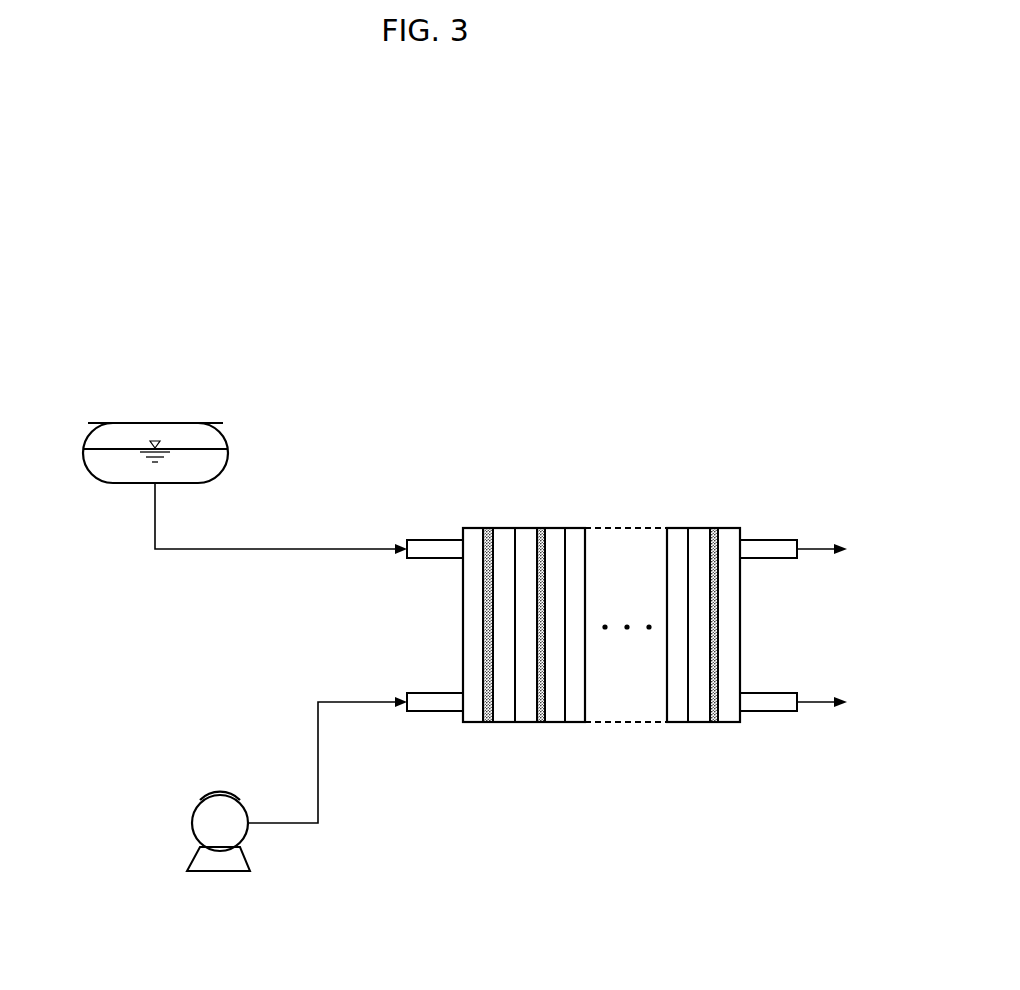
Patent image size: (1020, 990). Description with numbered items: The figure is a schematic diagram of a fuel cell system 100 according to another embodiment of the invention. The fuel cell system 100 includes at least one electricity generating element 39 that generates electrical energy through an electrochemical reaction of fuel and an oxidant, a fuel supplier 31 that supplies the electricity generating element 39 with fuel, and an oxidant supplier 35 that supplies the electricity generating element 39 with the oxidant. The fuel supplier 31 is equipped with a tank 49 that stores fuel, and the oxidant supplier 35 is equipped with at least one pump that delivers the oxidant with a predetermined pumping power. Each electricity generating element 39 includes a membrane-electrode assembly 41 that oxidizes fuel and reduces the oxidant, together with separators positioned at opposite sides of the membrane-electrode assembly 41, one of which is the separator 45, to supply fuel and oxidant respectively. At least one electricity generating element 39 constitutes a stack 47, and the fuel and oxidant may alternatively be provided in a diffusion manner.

The fuel cell system 100 is at (788, 400).
The fuel supplier 31 is at (70, 440).
The tank 49 is at (155, 423).
The oxidant supplier 35 is at (175, 814).
The electricity generating element 39 is at (483, 792).
The membrane-electrode assembly 41 is at (542, 722).
The separator 45 is at (553, 722).
The stack 47 is at (670, 520).